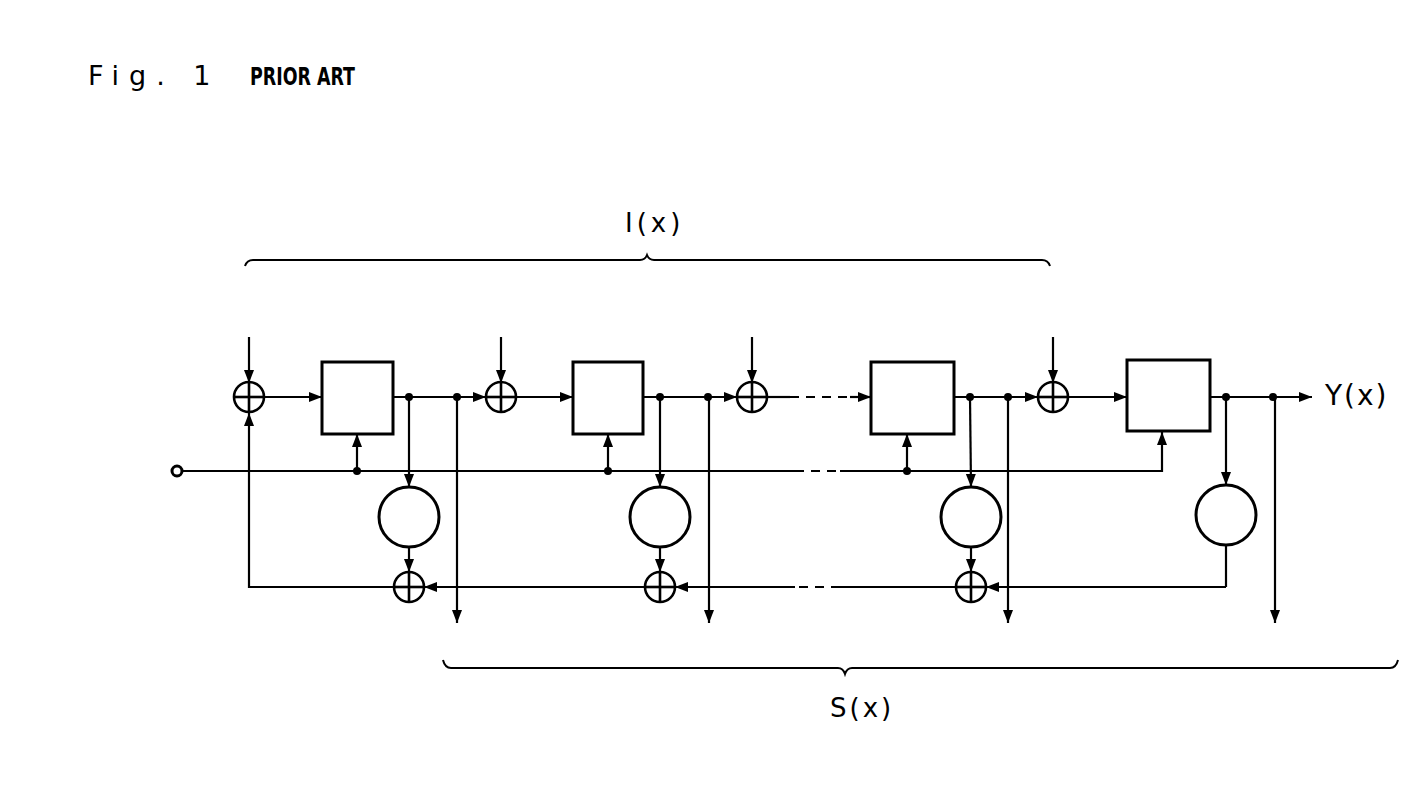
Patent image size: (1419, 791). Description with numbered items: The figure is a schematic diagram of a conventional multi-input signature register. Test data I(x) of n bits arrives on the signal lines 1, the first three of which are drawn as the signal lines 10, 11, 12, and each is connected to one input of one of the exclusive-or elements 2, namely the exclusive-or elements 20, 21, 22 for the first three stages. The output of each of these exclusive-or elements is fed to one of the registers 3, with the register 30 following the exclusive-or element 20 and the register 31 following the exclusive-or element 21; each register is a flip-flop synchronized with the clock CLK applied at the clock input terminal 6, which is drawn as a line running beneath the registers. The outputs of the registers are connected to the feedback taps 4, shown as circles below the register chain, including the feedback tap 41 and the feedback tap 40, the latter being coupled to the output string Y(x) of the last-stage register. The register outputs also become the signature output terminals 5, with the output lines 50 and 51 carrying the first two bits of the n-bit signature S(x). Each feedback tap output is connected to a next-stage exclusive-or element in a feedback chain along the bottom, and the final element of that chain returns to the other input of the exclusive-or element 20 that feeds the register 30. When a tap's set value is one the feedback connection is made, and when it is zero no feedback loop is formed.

The signal lines 1 is at (697, 338).
The signal line 10 is at (251, 346).
The signal line 11 is at (503, 346).
The signal line 12 is at (754, 346).
The exclusive-or elements 2 is at (681, 518).
The exclusive-or element 20 is at (256, 412).
The exclusive-or element 21 is at (508, 412).
The exclusive-or element 22 is at (759, 412).
The registers 3 is at (775, 363).
The register 30 is at (358, 362).
The register 31 is at (610, 362).
The feedback taps 4 is at (381, 519).
The feedback tap 40 is at (1198, 519).
The feedback tap 41 is at (943, 519).
The signature output terminals 5 is at (918, 510).
The test result output line 50 is at (458, 600).
The test result output line 51 is at (710, 598).
The clock input terminal 6 is at (207, 472).